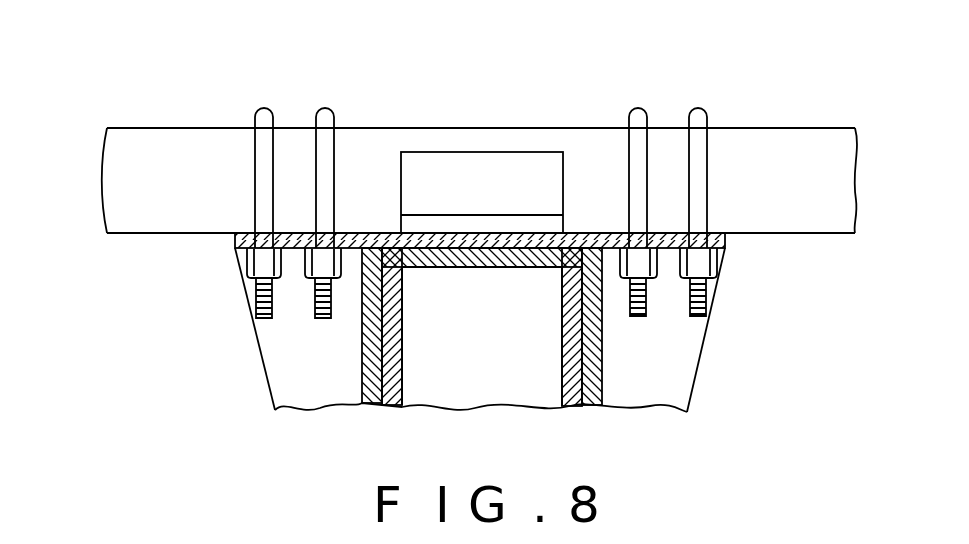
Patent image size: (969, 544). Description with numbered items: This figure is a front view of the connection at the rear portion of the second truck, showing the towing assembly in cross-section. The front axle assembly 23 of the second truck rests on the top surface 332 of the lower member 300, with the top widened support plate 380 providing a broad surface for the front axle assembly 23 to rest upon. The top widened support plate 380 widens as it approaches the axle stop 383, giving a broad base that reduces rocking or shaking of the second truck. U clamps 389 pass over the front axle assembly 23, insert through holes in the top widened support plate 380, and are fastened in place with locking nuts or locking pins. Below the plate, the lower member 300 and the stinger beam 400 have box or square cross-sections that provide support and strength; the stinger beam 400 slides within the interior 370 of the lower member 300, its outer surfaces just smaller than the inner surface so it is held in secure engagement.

The front axle assembly 23 is at (802, 153).
The top surface 332 is at (365, 233).
The axle stop 383 is at (468, 162).
The top widened support plate 380 is at (727, 240).
The U clamps 389 is at (323, 108).
The lower member 300 is at (375, 321).
The stinger beam 400 is at (393, 357).
The interior 370 is at (457, 333).